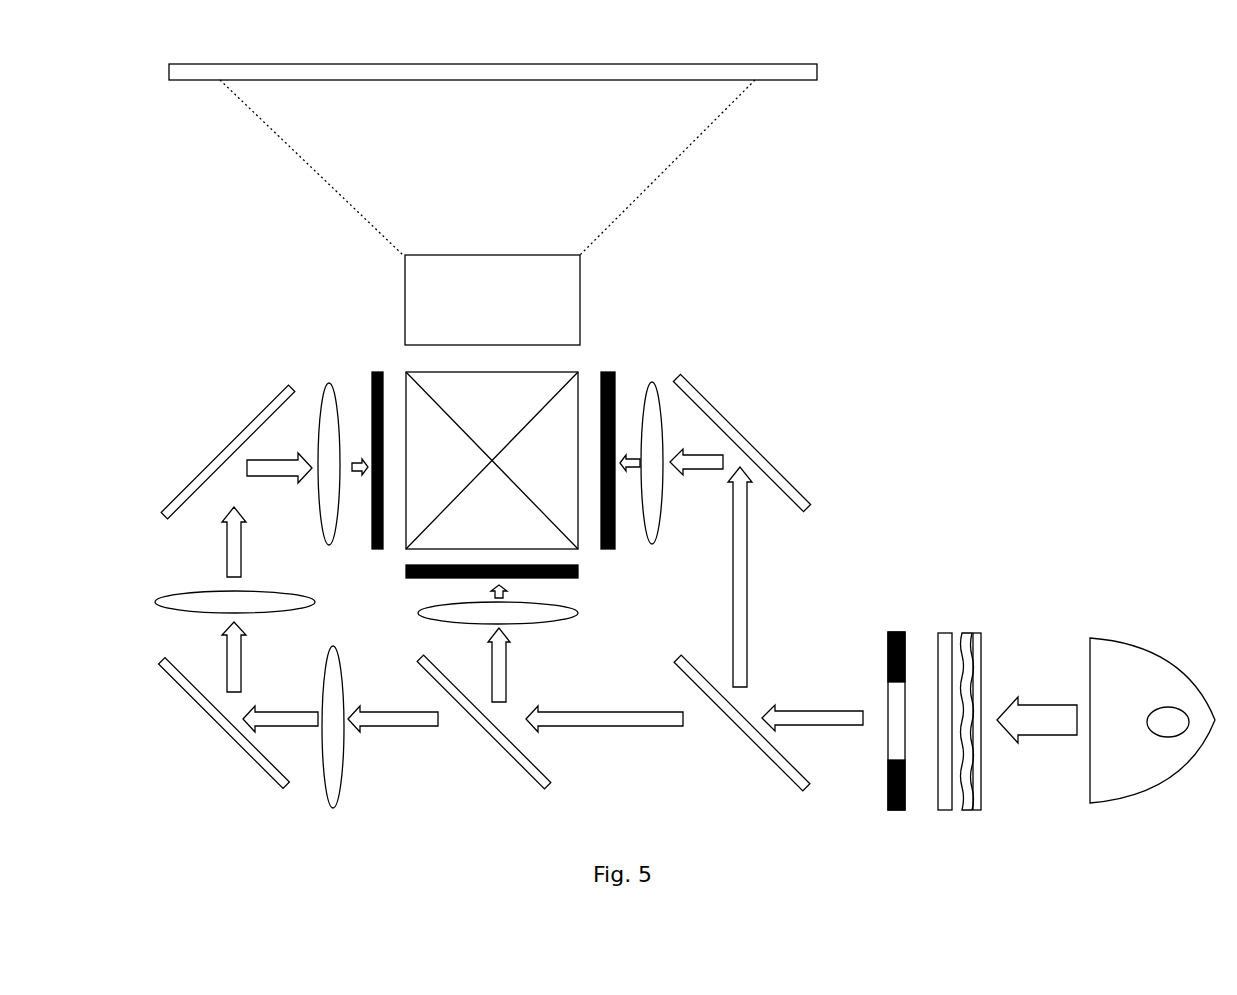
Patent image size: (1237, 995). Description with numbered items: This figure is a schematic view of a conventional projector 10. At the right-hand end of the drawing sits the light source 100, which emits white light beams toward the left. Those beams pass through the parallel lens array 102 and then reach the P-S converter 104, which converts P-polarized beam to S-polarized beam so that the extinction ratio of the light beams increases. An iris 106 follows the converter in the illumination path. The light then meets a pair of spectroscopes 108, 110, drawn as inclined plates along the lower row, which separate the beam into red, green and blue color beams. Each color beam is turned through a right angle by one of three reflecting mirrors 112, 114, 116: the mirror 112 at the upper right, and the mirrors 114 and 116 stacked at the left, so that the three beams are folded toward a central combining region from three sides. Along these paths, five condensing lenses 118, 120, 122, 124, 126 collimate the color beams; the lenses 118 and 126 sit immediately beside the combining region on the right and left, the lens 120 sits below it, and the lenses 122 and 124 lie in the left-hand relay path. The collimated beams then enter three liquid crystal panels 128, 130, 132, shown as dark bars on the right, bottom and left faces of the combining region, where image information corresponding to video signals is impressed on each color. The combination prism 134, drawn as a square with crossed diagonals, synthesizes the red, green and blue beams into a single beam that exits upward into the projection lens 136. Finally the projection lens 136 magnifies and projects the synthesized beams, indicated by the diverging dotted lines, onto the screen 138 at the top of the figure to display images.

The projector 10 is at (963, 358).
The light source 100 is at (1155, 653).
The parallel lens array 102 is at (980, 652).
The P-S converter 104 is at (950, 632).
The iris 106 is at (897, 632).
The spectroscope 108 is at (743, 712).
The spectroscope 110 is at (492, 742).
The reflecting mirror 112 is at (768, 460).
The reflecting mirror 114 is at (222, 729).
The reflecting mirror 116 is at (227, 450).
The condensing lens 118 is at (660, 368).
The condensing lens 120 is at (560, 622).
The condensing lens 122 is at (337, 788).
The condensing lens 124 is at (183, 597).
The condensing lens 126 is at (320, 385).
The liquid crystal panel 128 is at (612, 370).
The liquid crystal panel 130 is at (580, 578).
The liquid crystal panel 132 is at (372, 370).
The combination prism 134 is at (565, 368).
The projection lens 136 is at (580, 272).
The screen 138 is at (795, 80).